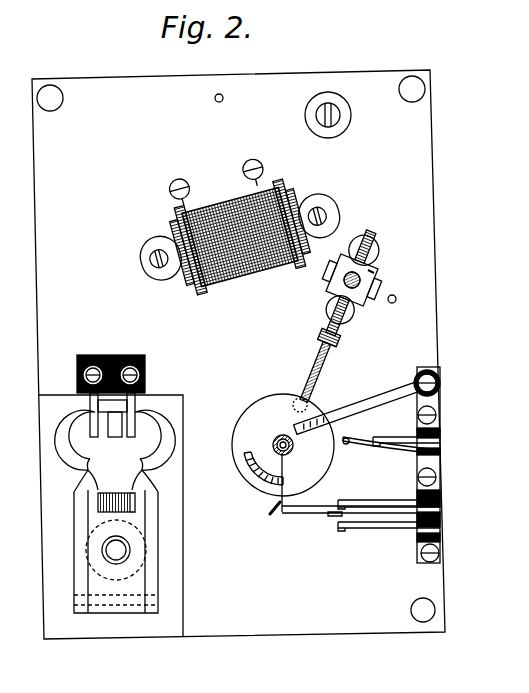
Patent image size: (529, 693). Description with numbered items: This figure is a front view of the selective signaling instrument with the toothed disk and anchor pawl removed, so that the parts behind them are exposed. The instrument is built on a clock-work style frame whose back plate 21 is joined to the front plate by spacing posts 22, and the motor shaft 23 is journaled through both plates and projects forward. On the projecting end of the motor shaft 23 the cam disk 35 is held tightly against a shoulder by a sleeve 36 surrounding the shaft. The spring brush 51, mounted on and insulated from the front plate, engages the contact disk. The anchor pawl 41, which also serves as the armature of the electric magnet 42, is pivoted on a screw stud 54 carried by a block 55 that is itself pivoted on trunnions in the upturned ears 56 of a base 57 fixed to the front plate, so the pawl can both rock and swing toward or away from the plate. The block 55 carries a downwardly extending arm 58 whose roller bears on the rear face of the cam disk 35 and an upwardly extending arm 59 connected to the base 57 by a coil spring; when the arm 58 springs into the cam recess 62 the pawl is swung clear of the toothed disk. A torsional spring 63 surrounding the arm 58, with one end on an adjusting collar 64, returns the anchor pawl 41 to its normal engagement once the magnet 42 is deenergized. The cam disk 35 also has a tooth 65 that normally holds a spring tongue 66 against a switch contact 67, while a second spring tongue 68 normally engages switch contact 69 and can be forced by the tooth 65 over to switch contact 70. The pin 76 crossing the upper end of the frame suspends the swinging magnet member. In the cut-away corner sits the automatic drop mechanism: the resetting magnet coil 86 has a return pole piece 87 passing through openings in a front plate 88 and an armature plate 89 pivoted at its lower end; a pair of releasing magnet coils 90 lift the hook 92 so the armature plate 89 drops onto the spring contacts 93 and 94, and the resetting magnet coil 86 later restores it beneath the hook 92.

The back plate 21 is at (158, 627).
The spacing posts 22 is at (425, 89).
The motor shaft 23 is at (273, 445).
The cam disk 35 is at (264, 398).
The sleeve 36 is at (290, 450).
The anchor pawl 41 is at (336, 296).
The electric magnet 42 is at (222, 270).
The spring brush 51 is at (386, 396).
The screw stud 54 is at (349, 265).
The block 55 is at (374, 272).
The upturned ears 56 is at (327, 281).
The base 57 is at (364, 232).
The downwardly extending arm 58 is at (319, 387).
The upwardly extending arm 59 is at (375, 246).
The cam recess 62 is at (259, 488).
The torsional spring 63 is at (343, 330).
The adjusting collar 64 is at (318, 337).
The tooth 65 is at (347, 446).
The spring tongue 66 is at (402, 456).
The switch contact 67 is at (390, 437).
The spring tongue 68 is at (298, 516).
The switch contact 69 is at (350, 499).
The switch contact 70 is at (366, 529).
The pin 76 is at (214, 98).
The resetting magnet coil 86 is at (108, 553).
The return pole piece 87 is at (98, 504).
The front plate 88 is at (70, 477).
The armature plate 89 is at (142, 505).
The releasing magnet coils 90 is at (76, 441).
The hook 92 is at (116, 503).
The spring contact 93 is at (88, 400).
The spring contact 94 is at (131, 400).